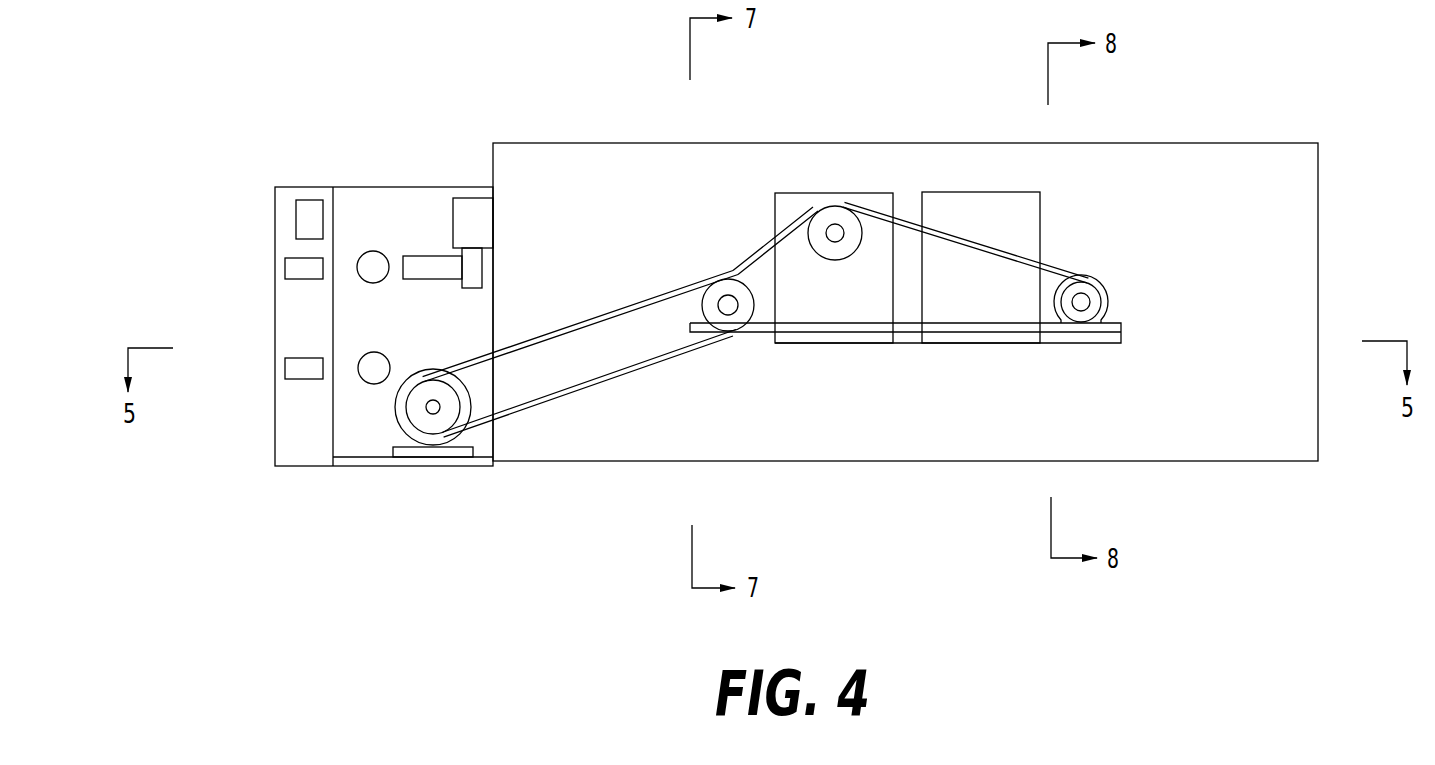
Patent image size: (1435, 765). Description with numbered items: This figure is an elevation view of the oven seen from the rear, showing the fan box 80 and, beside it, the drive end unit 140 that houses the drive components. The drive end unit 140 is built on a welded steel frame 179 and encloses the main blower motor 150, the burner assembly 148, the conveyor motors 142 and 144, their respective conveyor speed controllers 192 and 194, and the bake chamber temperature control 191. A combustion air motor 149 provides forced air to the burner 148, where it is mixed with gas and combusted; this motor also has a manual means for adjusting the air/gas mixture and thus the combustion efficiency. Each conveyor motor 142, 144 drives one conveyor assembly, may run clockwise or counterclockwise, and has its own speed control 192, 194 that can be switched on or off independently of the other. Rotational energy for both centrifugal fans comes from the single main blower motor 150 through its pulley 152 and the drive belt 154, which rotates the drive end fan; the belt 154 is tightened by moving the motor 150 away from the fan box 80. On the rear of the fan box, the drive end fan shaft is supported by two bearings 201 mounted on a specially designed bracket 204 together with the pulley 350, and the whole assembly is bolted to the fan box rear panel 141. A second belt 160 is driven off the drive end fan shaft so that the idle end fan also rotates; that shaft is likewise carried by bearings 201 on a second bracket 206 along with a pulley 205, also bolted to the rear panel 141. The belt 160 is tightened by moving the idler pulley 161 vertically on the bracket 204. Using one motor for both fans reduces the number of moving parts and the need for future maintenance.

The fan box 80 is at (870, 319).
The fan box rear panel 141 is at (923, 415).
The drive end unit 140 is at (395, 185).
The conveyor motor 142 is at (372, 262).
The conveyor motor 144 is at (372, 376).
The burner assembly 148 is at (472, 198).
The combustion air motor 149 is at (427, 280).
The main blower motor 150 is at (467, 432).
The pulley 152 is at (426, 408).
The drive belt 154 is at (597, 320).
The belt 160 is at (760, 252).
The idler pulley 161 is at (835, 224).
The welded steel frame 179 is at (355, 466).
The bake chamber temperature control 191 is at (296, 216).
The conveyor speed controller 192 is at (285, 267).
The conveyor speed controller 194 is at (285, 370).
The bearings 201 is at (1080, 323).
The bracket 204 is at (867, 193).
The bracket 206 is at (970, 192).
The pulley 205 is at (1108, 290).
The pulley 350 is at (740, 306).